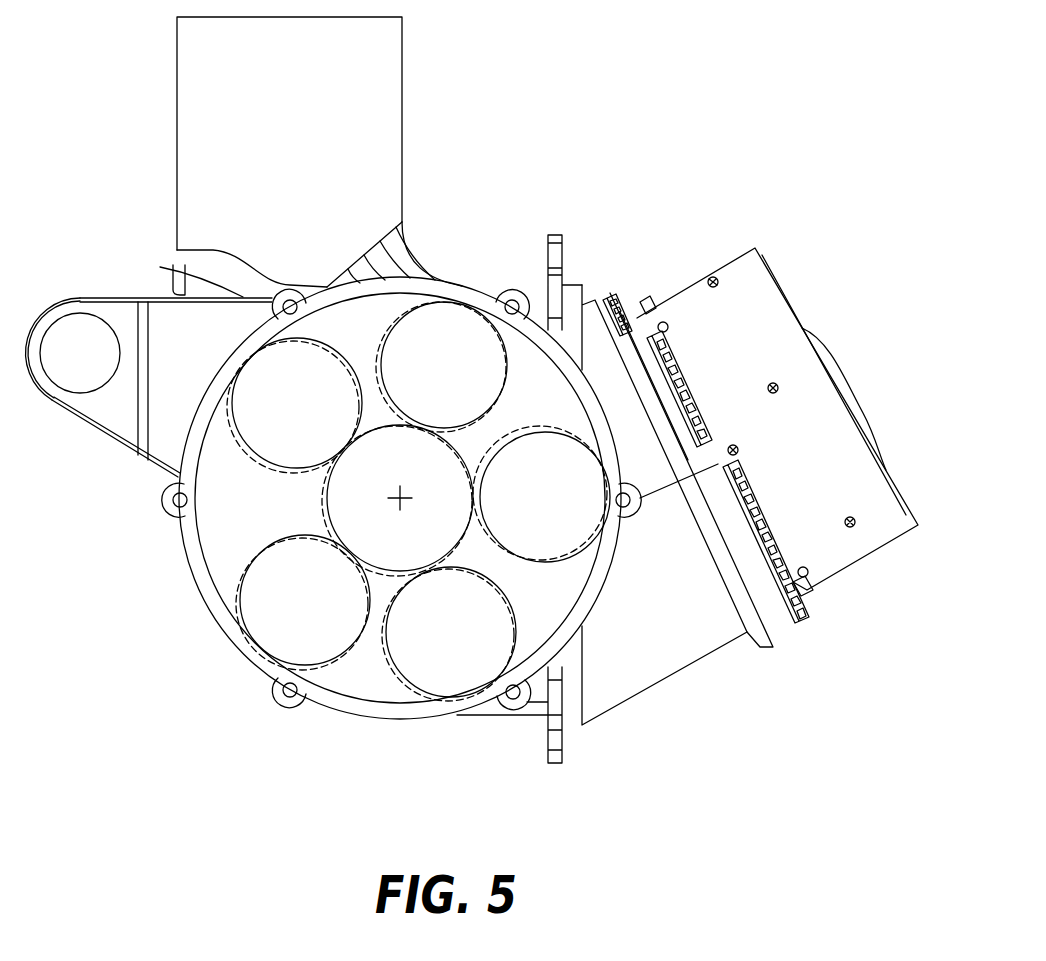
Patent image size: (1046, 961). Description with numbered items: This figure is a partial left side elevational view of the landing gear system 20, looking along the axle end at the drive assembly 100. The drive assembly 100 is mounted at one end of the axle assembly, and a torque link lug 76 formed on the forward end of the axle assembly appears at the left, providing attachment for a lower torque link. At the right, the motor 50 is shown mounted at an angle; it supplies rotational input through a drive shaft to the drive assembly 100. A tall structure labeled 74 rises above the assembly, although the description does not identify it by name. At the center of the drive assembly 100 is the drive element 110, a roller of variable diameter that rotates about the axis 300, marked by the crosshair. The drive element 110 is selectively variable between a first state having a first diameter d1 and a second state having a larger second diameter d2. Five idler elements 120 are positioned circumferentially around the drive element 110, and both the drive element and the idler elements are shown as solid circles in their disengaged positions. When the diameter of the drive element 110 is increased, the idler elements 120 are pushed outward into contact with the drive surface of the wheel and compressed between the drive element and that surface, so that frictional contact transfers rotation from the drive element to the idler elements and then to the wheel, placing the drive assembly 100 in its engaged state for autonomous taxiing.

The landing gear system 20 is at (677, 80).
The motor 50 is at (735, 262).
The fluid reservoir 74 is at (176, 74).
The torque link lug 76 is at (48, 397).
The drive assembly 100 is at (340, 666).
The drive element 110 is at (322, 488).
The idler elements 120 is at (200, 295).
The axis 300 is at (398, 505).
The first diameter d1 is at (655, 435).
The second diameter d2 is at (470, 760).